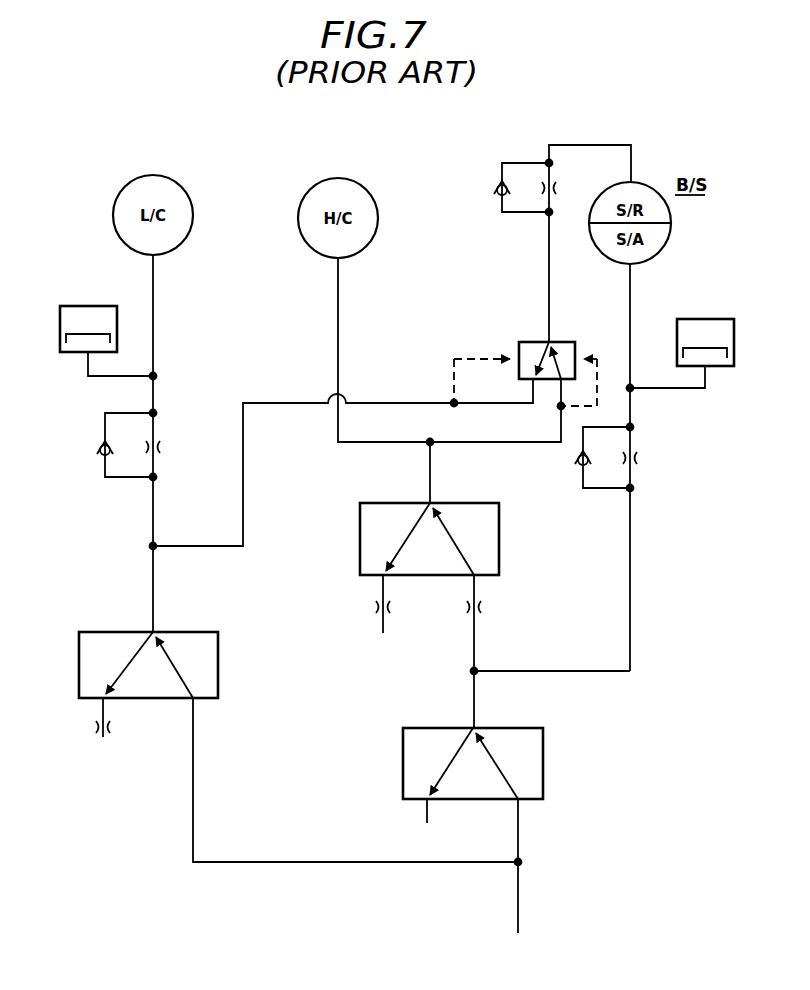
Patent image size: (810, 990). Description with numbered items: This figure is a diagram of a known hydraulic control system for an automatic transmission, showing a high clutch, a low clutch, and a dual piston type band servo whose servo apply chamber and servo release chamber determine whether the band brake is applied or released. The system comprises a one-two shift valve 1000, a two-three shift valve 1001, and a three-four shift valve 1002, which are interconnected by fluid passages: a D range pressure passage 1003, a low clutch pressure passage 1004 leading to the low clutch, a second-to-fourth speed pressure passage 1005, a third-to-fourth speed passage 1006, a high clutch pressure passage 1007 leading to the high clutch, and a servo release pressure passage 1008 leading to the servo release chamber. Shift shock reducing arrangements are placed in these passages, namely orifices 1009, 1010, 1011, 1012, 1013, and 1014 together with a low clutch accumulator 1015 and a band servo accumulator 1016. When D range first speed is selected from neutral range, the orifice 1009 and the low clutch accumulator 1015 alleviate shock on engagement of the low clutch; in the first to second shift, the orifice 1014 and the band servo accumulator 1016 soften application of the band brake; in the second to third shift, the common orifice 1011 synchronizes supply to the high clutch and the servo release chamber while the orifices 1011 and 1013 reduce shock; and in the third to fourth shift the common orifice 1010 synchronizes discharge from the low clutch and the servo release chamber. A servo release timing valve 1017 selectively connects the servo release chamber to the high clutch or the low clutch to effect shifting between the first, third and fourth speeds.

The 1-2 shift valve 1000 is at (545, 771).
The 2-3 shift valve 1001 is at (500, 550).
The 3-4 shift valve 1002 is at (220, 661).
The D range pressure passage 1003 is at (520, 897).
The low clutch pressure passage 1004 is at (152, 576).
The D2-D4 speed pressure passage 1005 is at (476, 699).
The D3-D4 speed passage 1006 is at (432, 480).
The high clutch pressure passage 1007 is at (340, 314).
The servo release pressure passage 1008 is at (601, 145).
The orifice 1009 is at (162, 449).
The orifice 1010 is at (95, 727).
The orifice 1011 is at (483, 607).
The orifice 1012 is at (374, 606).
The orifice 1013 is at (558, 190).
The orifice 1014 is at (639, 461).
The low clutch accumulator 1015 is at (82, 306).
The band servo accumulator 1016 is at (716, 319).
The servo release timing valve 1017 is at (525, 342).